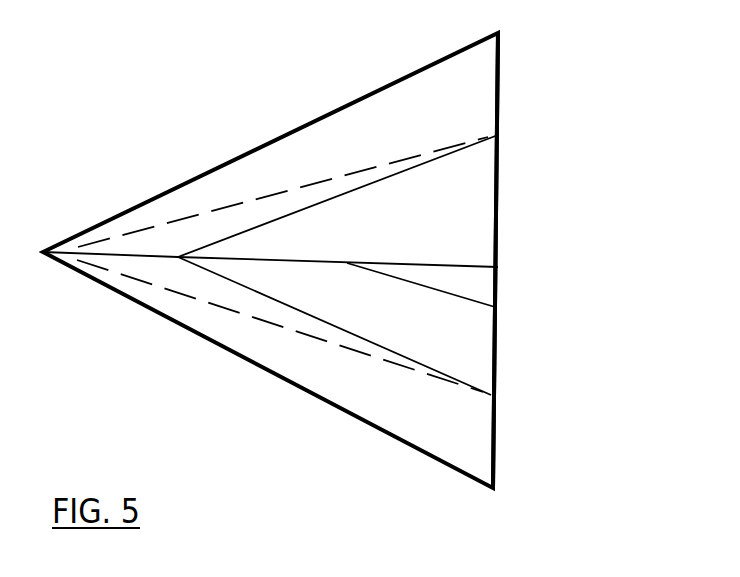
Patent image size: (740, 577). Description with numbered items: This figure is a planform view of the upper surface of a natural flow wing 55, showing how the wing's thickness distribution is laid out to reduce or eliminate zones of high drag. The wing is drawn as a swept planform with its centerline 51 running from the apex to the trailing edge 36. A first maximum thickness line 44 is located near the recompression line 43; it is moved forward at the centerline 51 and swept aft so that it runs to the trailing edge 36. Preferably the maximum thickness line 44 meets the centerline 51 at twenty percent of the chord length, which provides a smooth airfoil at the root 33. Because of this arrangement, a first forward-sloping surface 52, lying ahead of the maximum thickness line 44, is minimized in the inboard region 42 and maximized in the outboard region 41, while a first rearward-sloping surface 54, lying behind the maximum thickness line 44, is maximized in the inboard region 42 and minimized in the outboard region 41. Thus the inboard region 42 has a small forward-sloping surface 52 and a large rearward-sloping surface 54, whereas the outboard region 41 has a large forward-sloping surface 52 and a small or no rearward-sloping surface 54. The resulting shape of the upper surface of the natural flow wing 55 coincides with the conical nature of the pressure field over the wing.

The natural flow wing 55 is at (157, 108).
The trailing edge 36 is at (495, 427).
The root 33 is at (223, 262).
The maximum thickness line 44 is at (298, 208).
The recompression line 43 is at (183, 213).
The forward-sloping surface 52 is at (118, 275).
The centerline 51 is at (495, 307).
The inboard region 42 is at (412, 335).
The outboard region 41 is at (323, 380).
The rearward-sloping surface 54 is at (443, 251).